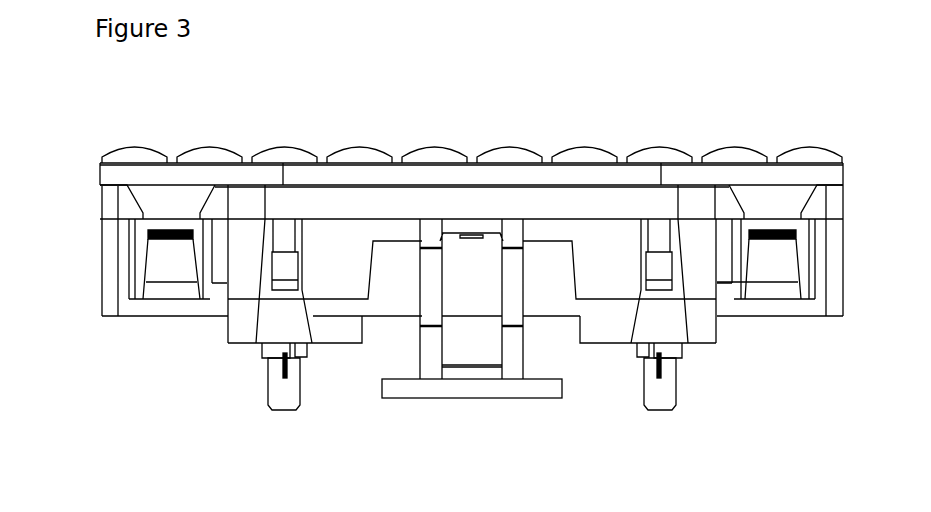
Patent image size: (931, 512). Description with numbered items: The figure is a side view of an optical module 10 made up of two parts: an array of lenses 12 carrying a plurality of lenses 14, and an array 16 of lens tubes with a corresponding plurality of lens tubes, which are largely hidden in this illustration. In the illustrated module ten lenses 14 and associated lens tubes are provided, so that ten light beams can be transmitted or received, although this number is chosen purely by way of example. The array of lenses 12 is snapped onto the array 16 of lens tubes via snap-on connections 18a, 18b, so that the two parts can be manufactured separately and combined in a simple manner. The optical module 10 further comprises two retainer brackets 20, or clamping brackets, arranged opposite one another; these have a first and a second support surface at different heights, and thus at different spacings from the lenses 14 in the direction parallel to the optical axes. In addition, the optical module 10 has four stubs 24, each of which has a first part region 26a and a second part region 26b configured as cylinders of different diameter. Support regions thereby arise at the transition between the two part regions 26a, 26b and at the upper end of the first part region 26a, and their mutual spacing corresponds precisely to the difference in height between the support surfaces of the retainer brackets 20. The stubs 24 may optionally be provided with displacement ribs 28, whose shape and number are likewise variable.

The optical module 10 is at (670, 84).
The array of lenses 12 is at (828, 182).
The lens 14 is at (507, 162).
The array of lens tubes 16 is at (112, 292).
The snap-on connection 18a is at (163, 205).
The snap-on connection 18b is at (137, 248).
The retainer bracket 20 is at (470, 388).
The stub 24 is at (243, 380).
The first part region 26a is at (265, 358).
The second part region 26b is at (282, 397).
The displacement rib 28 is at (287, 378).